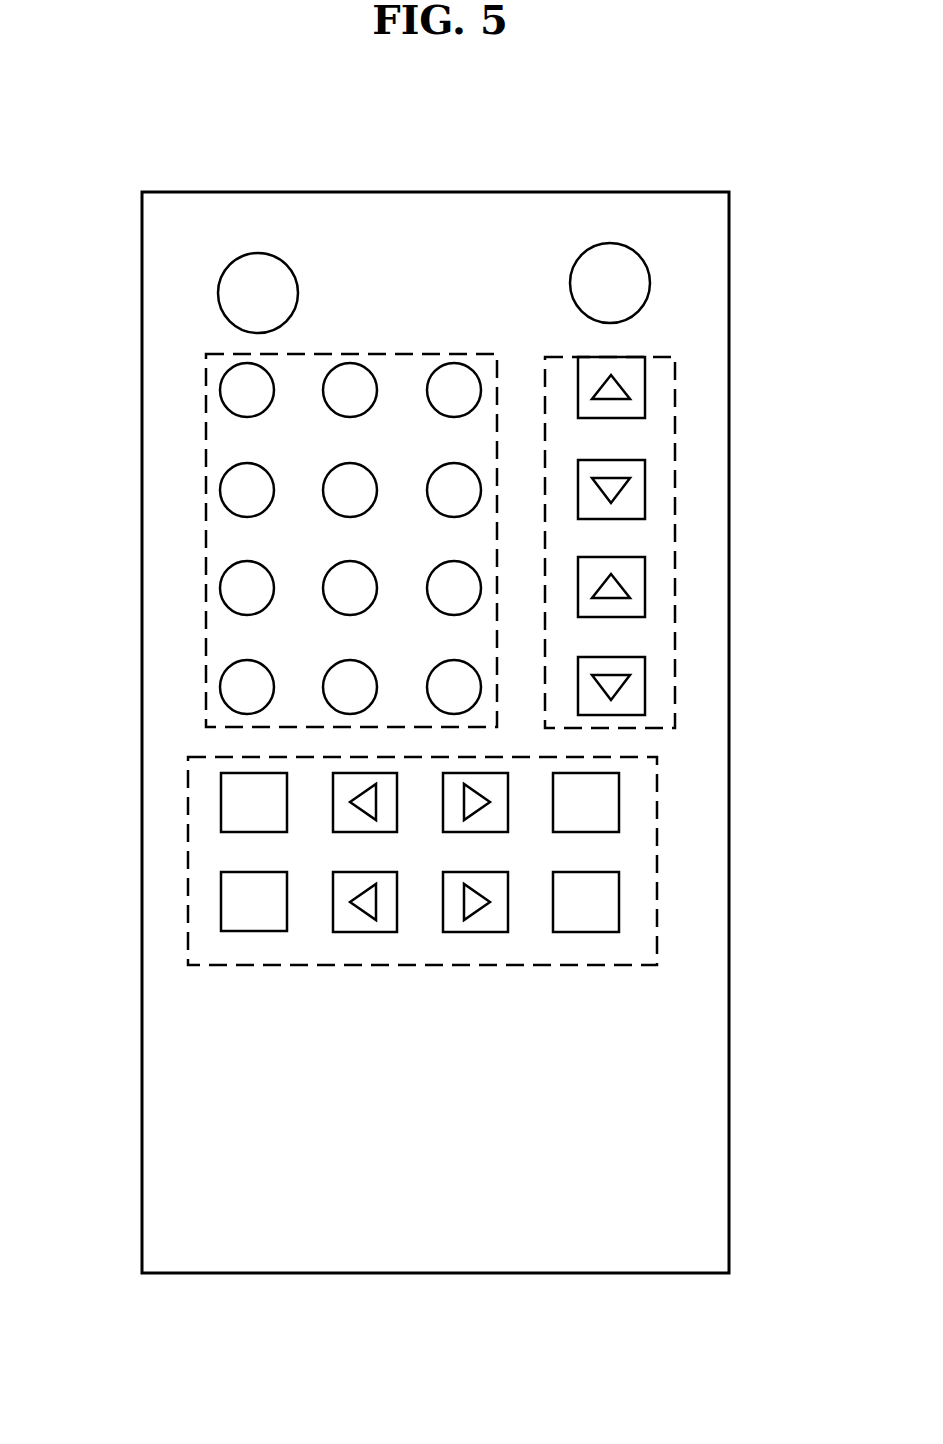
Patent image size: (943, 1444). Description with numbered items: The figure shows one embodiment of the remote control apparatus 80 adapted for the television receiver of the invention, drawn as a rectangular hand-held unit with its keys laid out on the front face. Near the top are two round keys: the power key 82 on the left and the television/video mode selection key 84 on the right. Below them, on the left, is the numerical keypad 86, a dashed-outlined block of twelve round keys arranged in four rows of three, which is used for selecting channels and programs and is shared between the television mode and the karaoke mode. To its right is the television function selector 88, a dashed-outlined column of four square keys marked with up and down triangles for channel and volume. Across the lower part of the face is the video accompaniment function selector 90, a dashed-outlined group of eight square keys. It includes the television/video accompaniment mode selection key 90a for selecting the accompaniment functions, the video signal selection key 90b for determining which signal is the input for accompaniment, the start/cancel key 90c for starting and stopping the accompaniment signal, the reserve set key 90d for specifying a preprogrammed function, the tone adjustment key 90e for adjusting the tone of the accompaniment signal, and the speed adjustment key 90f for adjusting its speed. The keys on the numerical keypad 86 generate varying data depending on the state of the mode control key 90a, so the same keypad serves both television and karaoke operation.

The remote controller 80 is at (455, 192).
The power key 82 is at (218, 291).
The television/video mode selection key 84 is at (650, 283).
The numerical keypad 86 is at (205, 387).
The television function selector 88 is at (676, 385).
The video accompaniment function selector 90 is at (439, 882).
The television/video accompaniment mode selection key 90a is at (221, 808).
The G selection key 90b is at (221, 910).
The start/cancel key 90c is at (619, 803).
The reserve set key 90d is at (619, 903).
The tone adjustment key 90e is at (425, 773).
The speed adjustment key 90f is at (475, 953).